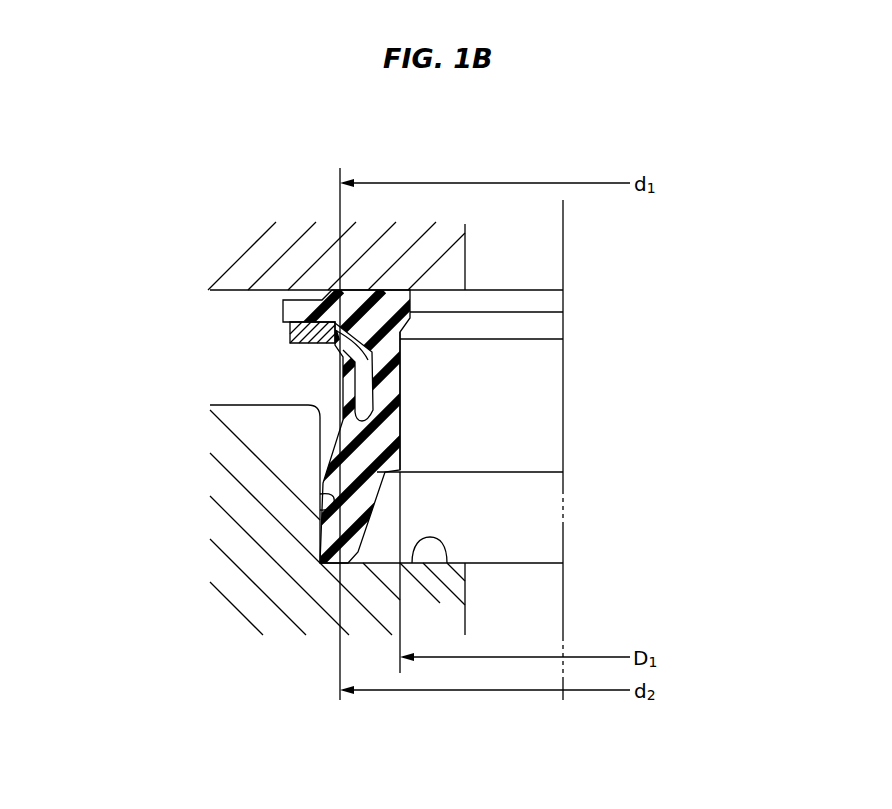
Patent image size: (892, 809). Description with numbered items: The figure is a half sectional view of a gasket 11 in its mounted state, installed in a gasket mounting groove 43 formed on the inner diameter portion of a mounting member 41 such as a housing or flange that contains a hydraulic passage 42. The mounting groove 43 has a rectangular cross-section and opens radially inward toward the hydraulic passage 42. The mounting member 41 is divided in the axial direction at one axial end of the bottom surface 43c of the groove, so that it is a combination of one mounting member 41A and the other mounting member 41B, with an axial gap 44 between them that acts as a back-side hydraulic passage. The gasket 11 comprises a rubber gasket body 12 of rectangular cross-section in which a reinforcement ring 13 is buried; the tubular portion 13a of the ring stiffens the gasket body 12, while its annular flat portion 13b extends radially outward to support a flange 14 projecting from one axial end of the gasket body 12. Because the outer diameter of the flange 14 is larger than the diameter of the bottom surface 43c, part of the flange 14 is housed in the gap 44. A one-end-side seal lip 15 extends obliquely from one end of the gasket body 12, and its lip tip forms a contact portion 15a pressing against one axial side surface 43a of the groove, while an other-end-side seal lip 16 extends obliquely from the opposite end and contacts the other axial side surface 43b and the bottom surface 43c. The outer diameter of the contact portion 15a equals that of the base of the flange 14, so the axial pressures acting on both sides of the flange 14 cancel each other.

The gasket 11 is at (301, 293).
The gasket body 12 is at (390, 393).
The reinforcement ring 13 is at (360, 358).
The tubular portion 13a is at (360, 388).
The flat portion 13b is at (325, 330).
The flange 14 is at (283, 303).
The one-end-side seal lip 15 is at (402, 288).
The contact portion 15a is at (378, 257).
The other-end-side seal lip 16 is at (333, 533).
The mounting member 41 is at (228, 235).
The one mounting member 41A is at (225, 256).
The other mounting member 41B is at (268, 623).
The hydraulic passage 42 is at (510, 605).
The gasket mounting groove 43 is at (330, 433).
The one axial side surface 43a is at (420, 291).
The other axial side surface 43b is at (447, 563).
The bottom surface 43c is at (317, 507).
The gap 44 is at (240, 372).